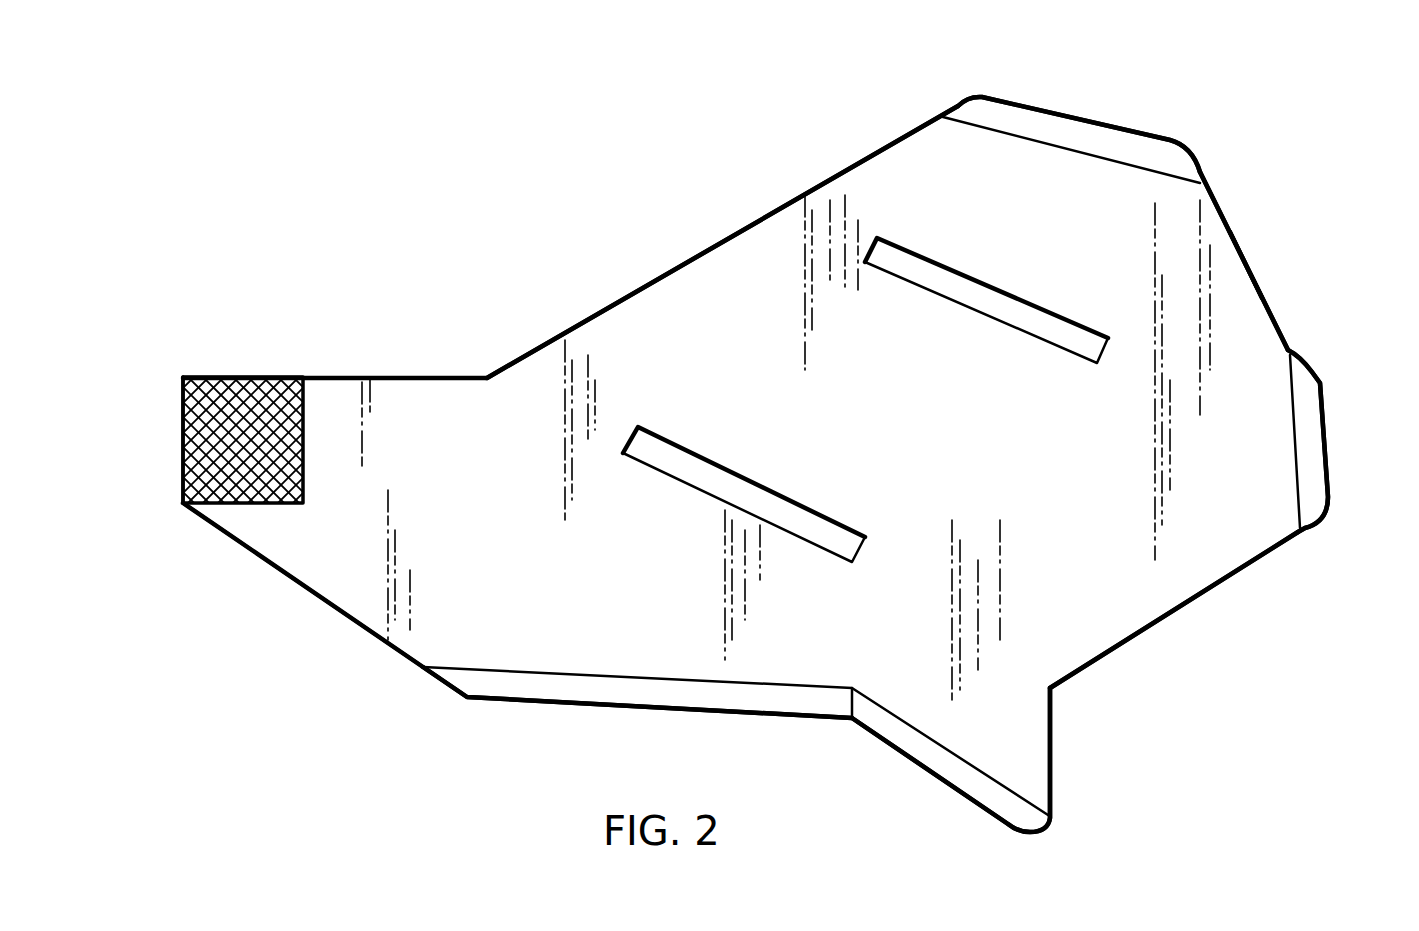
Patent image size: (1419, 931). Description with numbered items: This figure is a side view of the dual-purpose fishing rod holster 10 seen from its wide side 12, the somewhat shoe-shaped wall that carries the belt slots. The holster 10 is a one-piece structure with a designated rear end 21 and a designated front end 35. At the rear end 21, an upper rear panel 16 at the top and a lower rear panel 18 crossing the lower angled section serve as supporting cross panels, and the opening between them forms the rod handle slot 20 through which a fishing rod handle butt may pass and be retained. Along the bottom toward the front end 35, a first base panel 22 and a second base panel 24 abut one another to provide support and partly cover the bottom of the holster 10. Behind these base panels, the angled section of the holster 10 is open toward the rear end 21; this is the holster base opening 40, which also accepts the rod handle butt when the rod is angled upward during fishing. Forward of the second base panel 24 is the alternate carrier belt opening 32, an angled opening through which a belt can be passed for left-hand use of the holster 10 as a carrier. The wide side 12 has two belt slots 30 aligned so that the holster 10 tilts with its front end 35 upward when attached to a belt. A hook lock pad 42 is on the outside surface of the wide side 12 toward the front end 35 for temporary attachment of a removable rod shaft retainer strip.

The dual-purpose fishing rod holster 10 is at (448, 289).
The wide side 12 is at (675, 315).
The upper rear panel 16 is at (1117, 147).
The lower rear panel 18 is at (1325, 417).
The rod handle slot 20 is at (1225, 215).
The rear end 21 is at (1282, 242).
The first base panel 22 is at (945, 765).
The second base panel 24 is at (612, 692).
The belt slots 30 is at (990, 320).
The alternate carrier belt opening 32 is at (322, 638).
The front end 35 is at (154, 450).
The holster base opening 40 is at (1177, 613).
The hook lock pads 42 is at (245, 393).